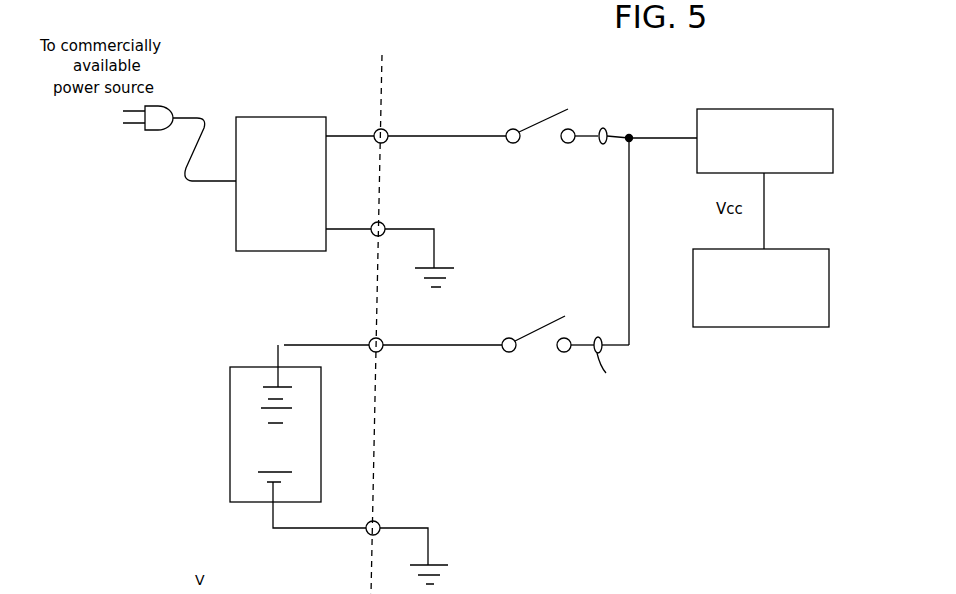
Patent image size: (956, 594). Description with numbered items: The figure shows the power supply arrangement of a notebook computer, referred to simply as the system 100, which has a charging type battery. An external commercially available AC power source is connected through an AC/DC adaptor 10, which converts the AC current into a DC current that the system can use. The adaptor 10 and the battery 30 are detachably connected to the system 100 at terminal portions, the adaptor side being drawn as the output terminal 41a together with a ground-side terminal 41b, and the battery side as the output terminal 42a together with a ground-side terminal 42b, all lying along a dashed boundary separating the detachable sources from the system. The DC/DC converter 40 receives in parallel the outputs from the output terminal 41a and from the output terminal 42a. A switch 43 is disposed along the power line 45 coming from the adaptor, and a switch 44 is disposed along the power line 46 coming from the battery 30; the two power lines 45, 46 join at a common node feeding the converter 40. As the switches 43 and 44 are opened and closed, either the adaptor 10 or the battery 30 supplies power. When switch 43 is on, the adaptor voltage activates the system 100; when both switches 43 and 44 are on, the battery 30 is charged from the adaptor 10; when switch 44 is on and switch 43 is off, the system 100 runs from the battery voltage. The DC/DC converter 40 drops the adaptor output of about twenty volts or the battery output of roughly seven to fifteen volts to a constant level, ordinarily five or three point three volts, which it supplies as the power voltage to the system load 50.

The AC/DC adaptor 10 is at (298, 108).
The battery pack 30 is at (205, 402).
The DC/DC converter 40 is at (781, 105).
The output terminal 41a is at (397, 119).
The AC/DC ground terminal connector 41b is at (396, 219).
The output terminal 42a is at (390, 360).
The battery ground terminal connector 42b is at (389, 515).
The switch 43 is at (536, 110).
The switch 44 is at (544, 318).
The power line 45 is at (602, 128).
The power line 46 is at (611, 369).
The system load 50 is at (738, 340).
The notebook computer 100 is at (624, 458).